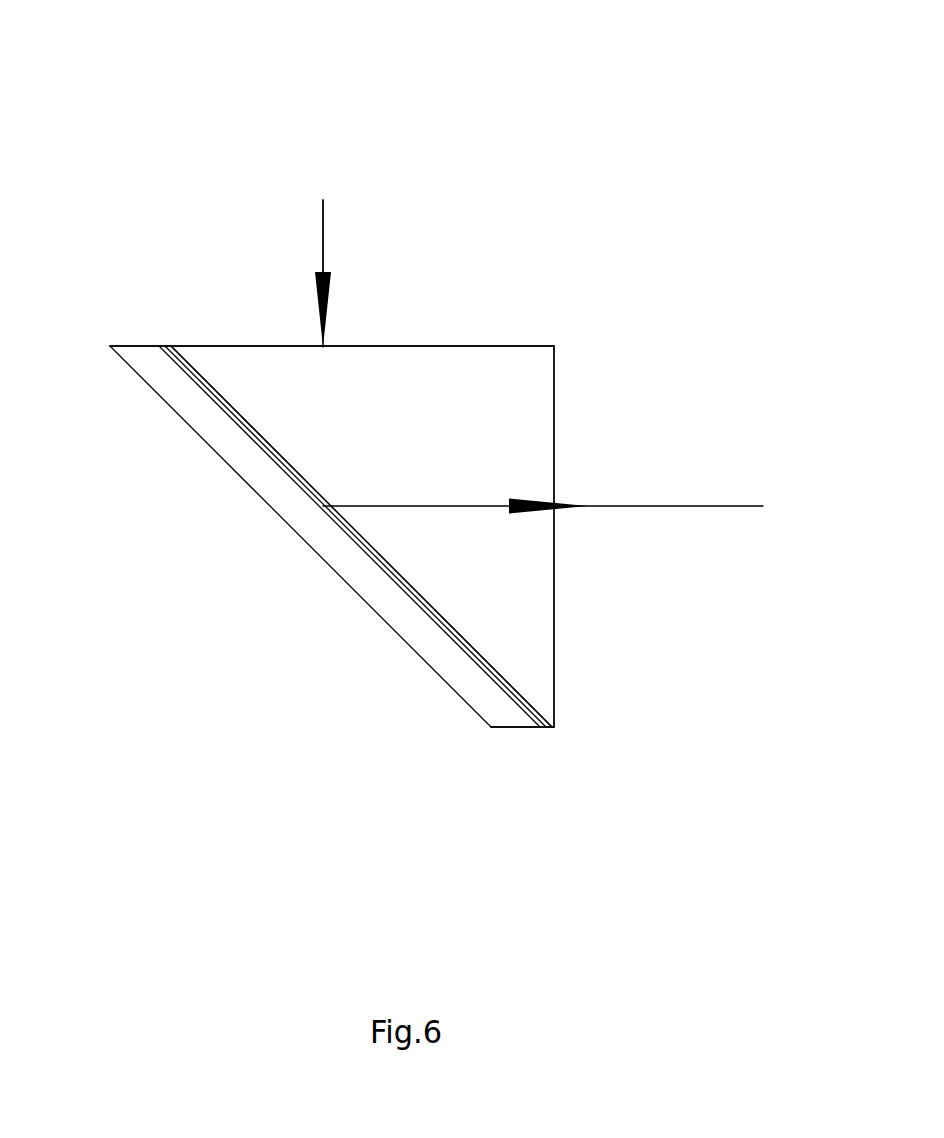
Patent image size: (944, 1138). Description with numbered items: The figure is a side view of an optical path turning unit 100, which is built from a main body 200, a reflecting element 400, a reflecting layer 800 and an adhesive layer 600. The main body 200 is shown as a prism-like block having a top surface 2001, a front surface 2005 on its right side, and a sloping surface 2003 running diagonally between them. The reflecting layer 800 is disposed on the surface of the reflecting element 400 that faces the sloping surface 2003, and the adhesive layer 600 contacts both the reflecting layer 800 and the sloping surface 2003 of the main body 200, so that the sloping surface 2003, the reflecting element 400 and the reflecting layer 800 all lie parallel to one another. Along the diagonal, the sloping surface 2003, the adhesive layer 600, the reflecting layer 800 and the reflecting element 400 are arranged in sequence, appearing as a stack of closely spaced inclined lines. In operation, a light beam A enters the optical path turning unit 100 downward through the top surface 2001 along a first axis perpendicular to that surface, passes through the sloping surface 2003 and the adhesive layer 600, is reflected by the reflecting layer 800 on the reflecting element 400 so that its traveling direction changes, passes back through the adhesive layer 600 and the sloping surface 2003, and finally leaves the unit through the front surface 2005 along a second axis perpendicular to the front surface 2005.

The optical path turning unit 100 is at (82, 52).
The main body 200 is at (657, 255).
The top surface 2001 is at (490, 345).
The sloping surface 2003 is at (490, 682).
The front surface 2005 is at (554, 603).
The reflecting element 400 is at (205, 418).
The adhesive layer 600 is at (428, 607).
The reflecting layer 800 is at (327, 522).
The light beam A is at (323, 232).